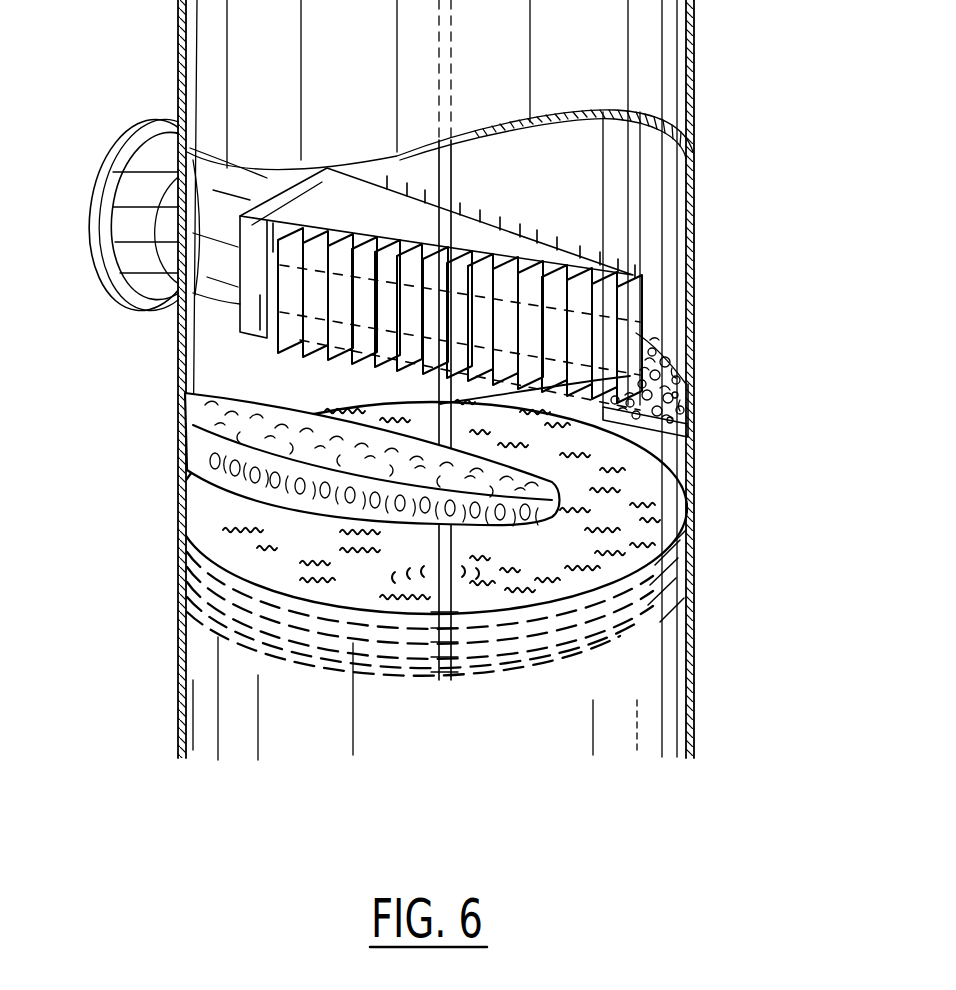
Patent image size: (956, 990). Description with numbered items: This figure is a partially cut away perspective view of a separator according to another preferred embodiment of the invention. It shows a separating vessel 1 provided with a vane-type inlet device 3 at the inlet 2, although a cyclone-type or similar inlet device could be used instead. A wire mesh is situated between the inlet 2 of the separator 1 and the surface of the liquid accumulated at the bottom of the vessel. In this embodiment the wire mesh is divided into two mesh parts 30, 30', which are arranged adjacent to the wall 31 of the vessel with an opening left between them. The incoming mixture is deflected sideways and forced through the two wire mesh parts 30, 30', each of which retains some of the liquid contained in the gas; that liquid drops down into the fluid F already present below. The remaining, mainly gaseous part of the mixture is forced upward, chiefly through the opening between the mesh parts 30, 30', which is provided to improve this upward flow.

The separating vessel 1 is at (716, 60).
The inlet 2 is at (118, 146).
The vane-type inlet device 3 is at (263, 340).
The wire mesh part 30 is at (332, 465).
The wire mesh part 30' is at (688, 385).
The wall 31 is at (695, 487).
The fluid F is at (695, 611).